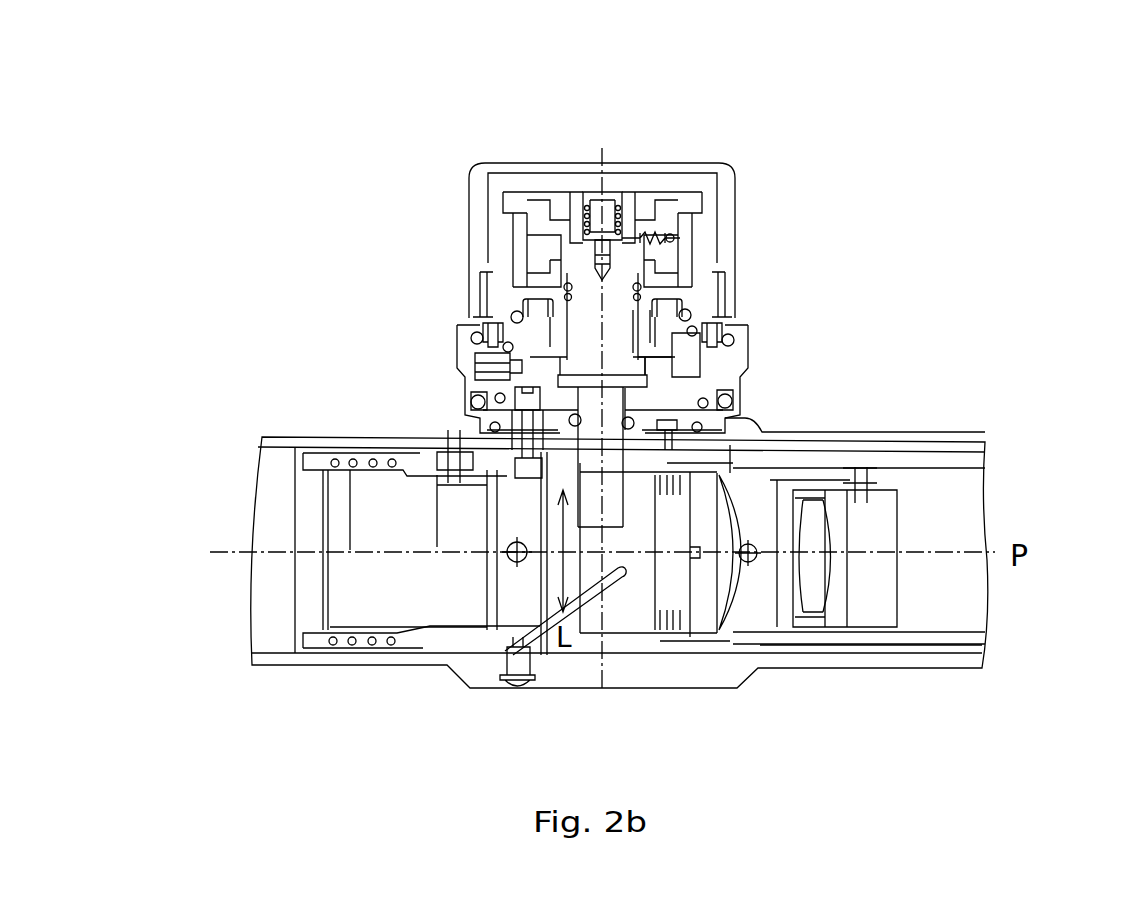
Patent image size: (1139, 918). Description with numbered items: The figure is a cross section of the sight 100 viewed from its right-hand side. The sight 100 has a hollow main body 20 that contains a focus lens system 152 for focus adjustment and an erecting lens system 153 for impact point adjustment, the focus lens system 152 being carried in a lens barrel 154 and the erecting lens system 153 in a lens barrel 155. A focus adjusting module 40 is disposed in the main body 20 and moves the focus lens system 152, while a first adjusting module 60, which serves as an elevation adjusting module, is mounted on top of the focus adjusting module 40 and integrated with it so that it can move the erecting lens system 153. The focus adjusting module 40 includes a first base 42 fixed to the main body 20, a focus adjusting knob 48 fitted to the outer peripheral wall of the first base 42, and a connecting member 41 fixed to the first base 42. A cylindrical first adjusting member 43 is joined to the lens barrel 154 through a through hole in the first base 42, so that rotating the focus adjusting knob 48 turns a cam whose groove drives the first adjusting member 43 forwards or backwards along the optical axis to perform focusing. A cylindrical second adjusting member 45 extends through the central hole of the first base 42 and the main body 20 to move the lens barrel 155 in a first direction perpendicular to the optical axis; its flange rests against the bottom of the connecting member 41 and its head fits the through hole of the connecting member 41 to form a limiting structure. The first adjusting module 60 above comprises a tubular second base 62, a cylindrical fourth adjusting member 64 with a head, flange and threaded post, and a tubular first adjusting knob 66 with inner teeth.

The sight 100 is at (618, 35).
The main body 20 is at (279, 443).
The focus adjusting module 40 is at (778, 380).
The connecting member 41 is at (537, 342).
The first base 42 is at (710, 382).
The first adjusting member 43 is at (512, 410).
The second adjusting member 45 is at (617, 373).
The focus adjusting knob 48 is at (737, 352).
The first adjusting module 60 is at (488, 128).
The second base 62 is at (493, 297).
The fourth adjusting member 64 is at (700, 303).
The first adjusting knob 66 is at (652, 202).
The focus lens system 152 is at (537, 660).
The erecting lens system 153 is at (975, 650).
The lens barrel 154 is at (395, 638).
The lens barrel 155 is at (645, 632).